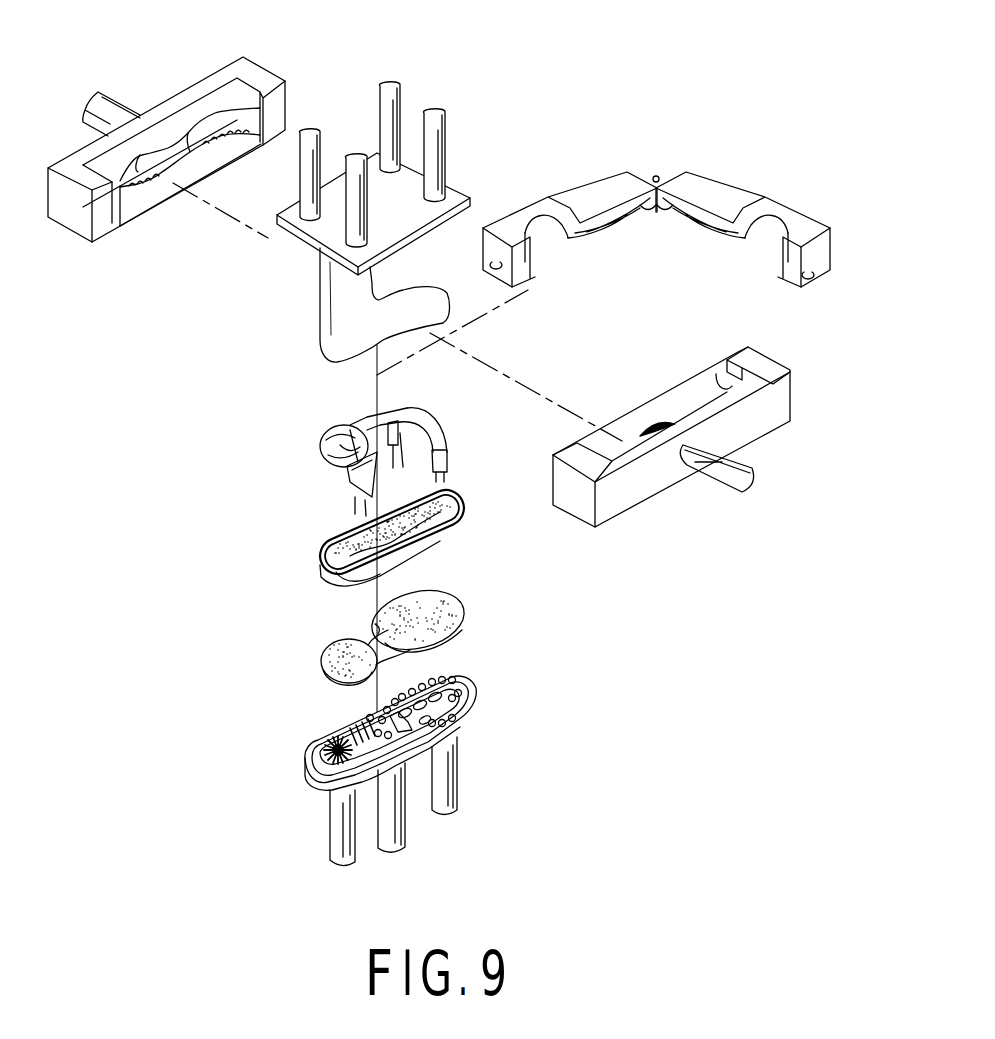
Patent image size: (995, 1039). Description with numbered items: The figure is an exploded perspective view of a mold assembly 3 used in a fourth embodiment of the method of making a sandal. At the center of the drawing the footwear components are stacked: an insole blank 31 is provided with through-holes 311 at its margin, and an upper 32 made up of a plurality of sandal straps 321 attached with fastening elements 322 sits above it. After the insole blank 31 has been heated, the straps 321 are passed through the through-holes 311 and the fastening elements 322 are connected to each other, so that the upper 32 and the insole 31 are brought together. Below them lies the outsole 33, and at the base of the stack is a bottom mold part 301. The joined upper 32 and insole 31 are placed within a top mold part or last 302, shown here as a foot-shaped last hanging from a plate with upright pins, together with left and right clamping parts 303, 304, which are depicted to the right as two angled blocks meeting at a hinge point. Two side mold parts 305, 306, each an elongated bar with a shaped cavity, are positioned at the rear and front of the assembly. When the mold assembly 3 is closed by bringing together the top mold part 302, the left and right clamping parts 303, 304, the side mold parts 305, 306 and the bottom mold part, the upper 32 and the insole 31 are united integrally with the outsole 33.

The mold assembly 3 is at (763, 327).
The insole blank 31 is at (322, 571).
The through-holes 311 is at (337, 537).
The upper 32 is at (325, 425).
The sandal straps 321 is at (347, 480).
The fastening elements 322 is at (353, 510).
The outsole 33 is at (463, 603).
The bottom sole mold 301 is at (587, 670).
The top mold part 302 is at (340, 302).
The left clamping part 303 is at (600, 193).
The right clamping part 304 is at (781, 96).
The side mold part 305 is at (775, 417).
The side mold part 306 is at (247, 3).